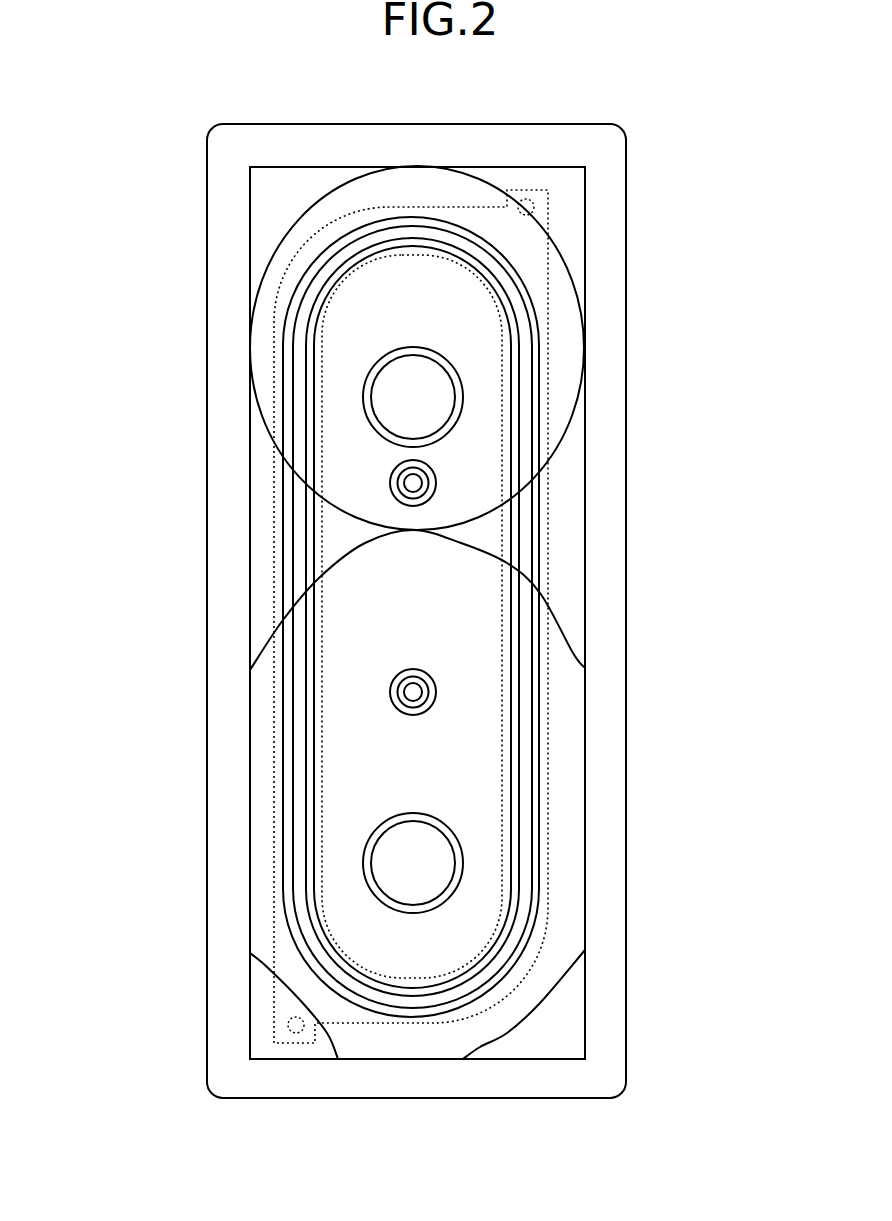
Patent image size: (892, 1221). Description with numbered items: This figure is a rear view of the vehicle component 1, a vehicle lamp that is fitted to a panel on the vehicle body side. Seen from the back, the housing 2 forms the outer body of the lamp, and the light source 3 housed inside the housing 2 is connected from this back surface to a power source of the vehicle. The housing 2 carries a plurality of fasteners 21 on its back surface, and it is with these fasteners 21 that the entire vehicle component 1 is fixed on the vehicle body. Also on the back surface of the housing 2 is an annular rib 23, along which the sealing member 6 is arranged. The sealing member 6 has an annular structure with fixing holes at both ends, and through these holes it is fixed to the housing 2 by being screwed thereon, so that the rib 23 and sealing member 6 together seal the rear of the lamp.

The vehicle component 1 is at (665, 89).
The housing 2 is at (558, 666).
The light source 3 is at (418, 396).
The sealing member 6 is at (548, 743).
The fasteners 21 is at (393, 485).
The annular rib 23 is at (539, 828).